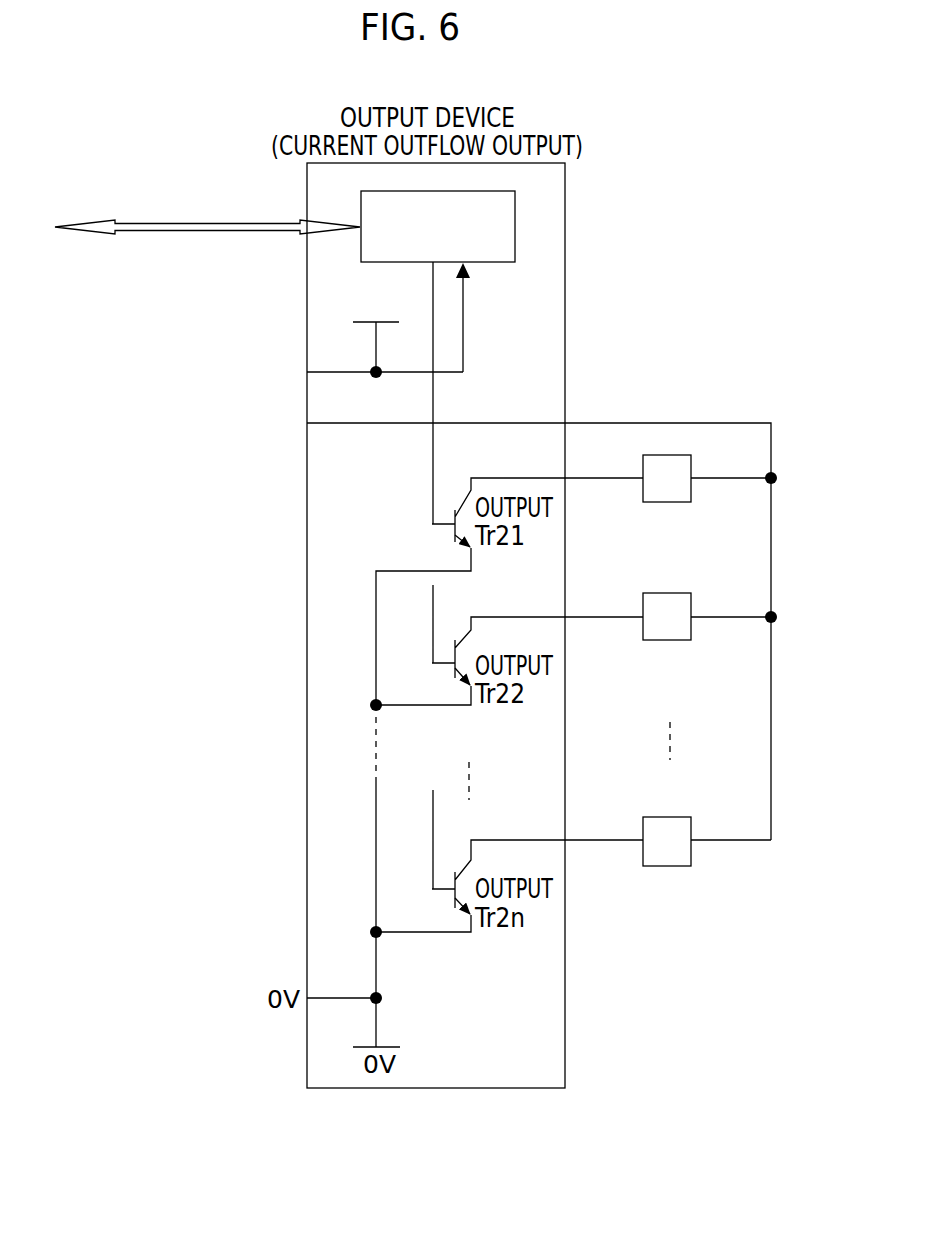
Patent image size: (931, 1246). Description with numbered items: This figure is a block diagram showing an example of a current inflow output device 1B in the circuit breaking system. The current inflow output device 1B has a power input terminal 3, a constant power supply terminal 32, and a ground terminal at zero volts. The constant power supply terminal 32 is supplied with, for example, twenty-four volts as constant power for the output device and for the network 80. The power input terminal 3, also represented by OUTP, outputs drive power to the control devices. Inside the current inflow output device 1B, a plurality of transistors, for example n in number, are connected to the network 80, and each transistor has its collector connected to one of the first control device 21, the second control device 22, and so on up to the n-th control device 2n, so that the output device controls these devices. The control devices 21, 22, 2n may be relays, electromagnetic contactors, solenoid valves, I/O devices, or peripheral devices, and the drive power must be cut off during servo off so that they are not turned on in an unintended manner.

The current inflow output device 1B is at (565, 265).
The network 80 is at (515, 205).
The constant power supply terminal 32 is at (307, 372).
The power input terminal 3 is at (307, 423).
The first control device 21 is at (643, 470).
The second control device 22 is at (691, 608).
The n-th control device 2n is at (691, 830).